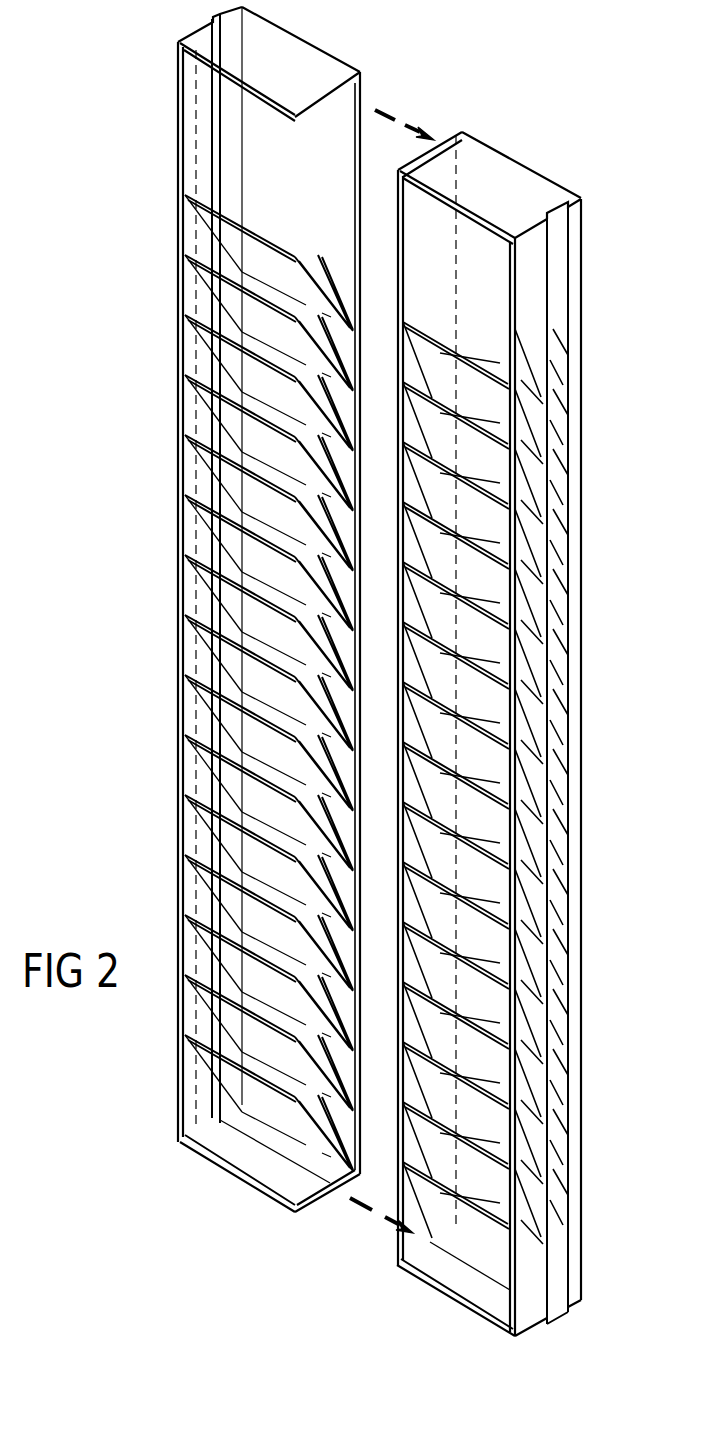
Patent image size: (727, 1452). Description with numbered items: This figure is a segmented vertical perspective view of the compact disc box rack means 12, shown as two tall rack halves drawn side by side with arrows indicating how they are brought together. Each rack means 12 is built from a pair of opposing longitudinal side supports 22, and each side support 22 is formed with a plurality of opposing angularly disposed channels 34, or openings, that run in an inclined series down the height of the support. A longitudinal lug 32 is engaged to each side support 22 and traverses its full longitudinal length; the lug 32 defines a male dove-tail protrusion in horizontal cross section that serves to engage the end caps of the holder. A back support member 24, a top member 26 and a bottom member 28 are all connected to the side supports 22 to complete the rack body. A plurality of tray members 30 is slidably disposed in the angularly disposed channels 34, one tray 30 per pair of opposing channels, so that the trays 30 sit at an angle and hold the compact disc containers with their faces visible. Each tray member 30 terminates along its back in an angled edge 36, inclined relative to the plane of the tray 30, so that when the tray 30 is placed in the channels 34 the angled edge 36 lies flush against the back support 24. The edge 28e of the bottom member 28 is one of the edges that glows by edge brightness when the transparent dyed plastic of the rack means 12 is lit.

The rack means 12 is at (552, 140).
The longitudinal side support 22 is at (535, 280).
The back support member 24 is at (360, 187).
The top member 26 is at (323, 100).
The bottom member 28 is at (187, 1153).
The edge of the bottom member 28e is at (217, 1150).
The tray member 30 is at (267, 247).
The longitudinal lug 32 is at (208, 17).
The angularly disposed channel 34 is at (195, 230).
The angled edge 36 is at (355, 386).